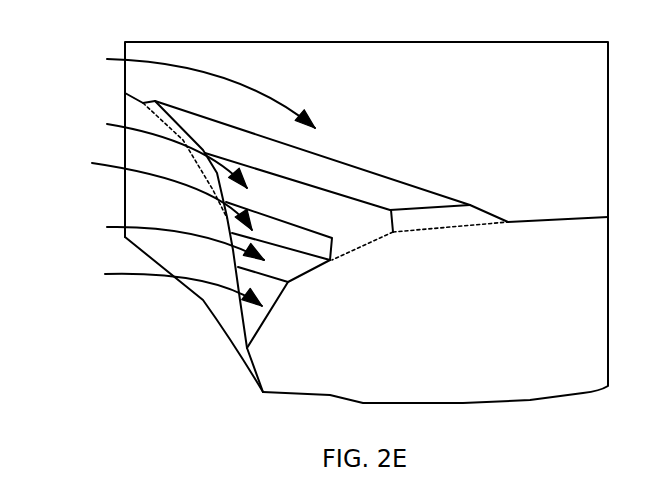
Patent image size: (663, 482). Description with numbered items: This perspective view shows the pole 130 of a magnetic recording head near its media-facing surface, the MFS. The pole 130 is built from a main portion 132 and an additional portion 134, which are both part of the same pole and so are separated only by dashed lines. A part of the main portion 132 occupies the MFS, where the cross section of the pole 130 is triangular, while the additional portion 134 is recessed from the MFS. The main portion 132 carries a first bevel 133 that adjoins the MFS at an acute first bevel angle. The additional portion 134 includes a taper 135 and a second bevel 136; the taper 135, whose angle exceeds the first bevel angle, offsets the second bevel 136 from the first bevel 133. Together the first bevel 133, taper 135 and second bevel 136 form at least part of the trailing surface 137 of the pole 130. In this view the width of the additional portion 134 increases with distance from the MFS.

The pole 130 is at (80, 26).
The main portion 132 is at (366, 242).
The first bevel 133 is at (162, 237).
The additional portion 134 is at (331, 191).
The taper 135 is at (147, 189).
The second bevel 136 is at (150, 149).
The trailing surface 137 is at (184, 87).
The media-facing surface MFS is at (148, 284).